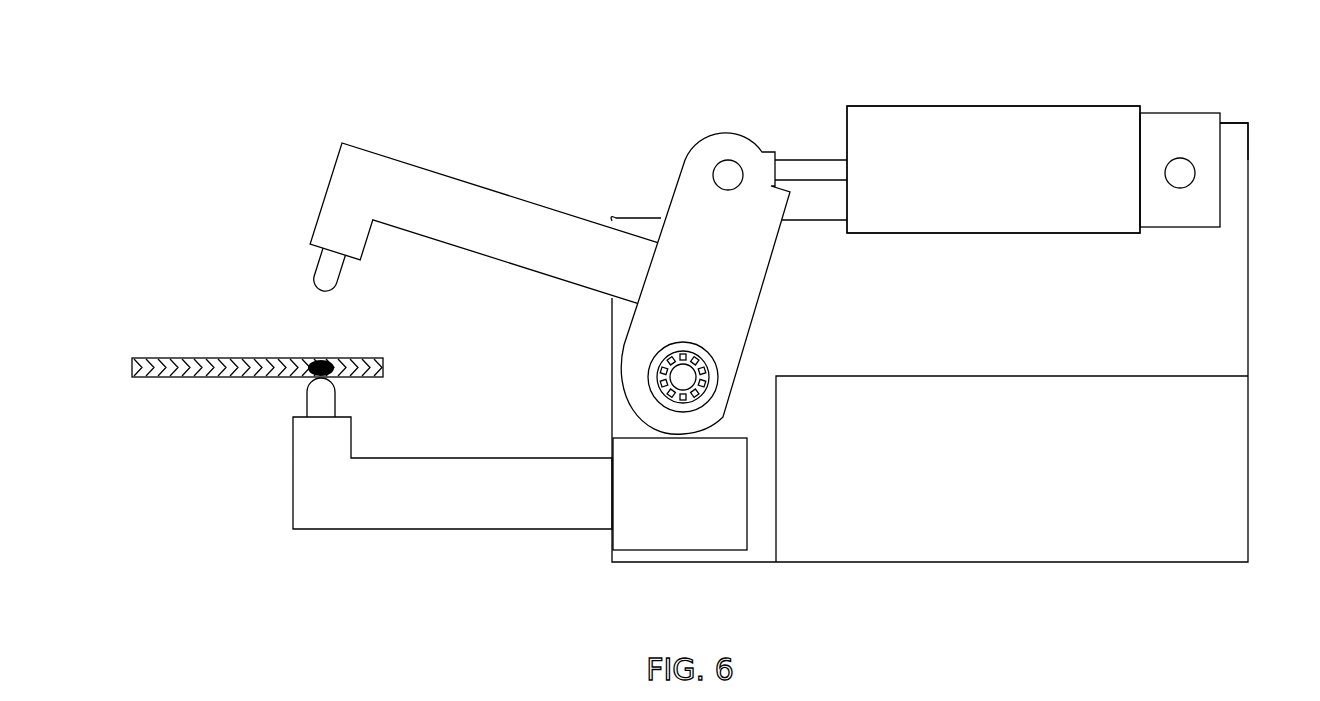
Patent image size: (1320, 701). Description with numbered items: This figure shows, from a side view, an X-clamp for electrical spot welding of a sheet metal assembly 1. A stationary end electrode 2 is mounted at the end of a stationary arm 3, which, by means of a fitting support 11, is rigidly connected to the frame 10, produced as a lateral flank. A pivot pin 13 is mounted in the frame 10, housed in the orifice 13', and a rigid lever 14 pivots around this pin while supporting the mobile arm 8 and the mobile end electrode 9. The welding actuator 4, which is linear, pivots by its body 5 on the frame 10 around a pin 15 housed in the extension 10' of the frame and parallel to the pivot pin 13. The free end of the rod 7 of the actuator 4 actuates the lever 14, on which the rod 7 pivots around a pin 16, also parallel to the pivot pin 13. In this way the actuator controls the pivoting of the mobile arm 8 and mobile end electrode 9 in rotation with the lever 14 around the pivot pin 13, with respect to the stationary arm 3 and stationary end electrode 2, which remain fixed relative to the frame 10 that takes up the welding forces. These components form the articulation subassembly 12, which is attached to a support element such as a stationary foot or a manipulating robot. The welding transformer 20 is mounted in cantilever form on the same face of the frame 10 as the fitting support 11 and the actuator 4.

The sheet metal assembly 1 is at (250, 356).
The stationary end electrode 2 is at (312, 396).
The stationary arm 3 is at (332, 503).
The welding actuator 4 is at (1089, 106).
The body of the welding actuator 5 is at (883, 130).
The rod 7 is at (807, 162).
The mobile arm 8 is at (349, 195).
The mobile end electrode 9 is at (311, 268).
The frame 10 is at (1039, 342).
The extension 10' is at (1252, 105).
The fitting support 11 is at (668, 538).
The articulation subassembly 12 is at (576, 546).
The pivot pin 13 is at (718, 478).
The orifice 13' is at (647, 484).
The rigid lever 14 is at (698, 232).
The pin 15 is at (1175, 160).
The pin 16 is at (722, 170).
The welding transformer 20 is at (1167, 523).